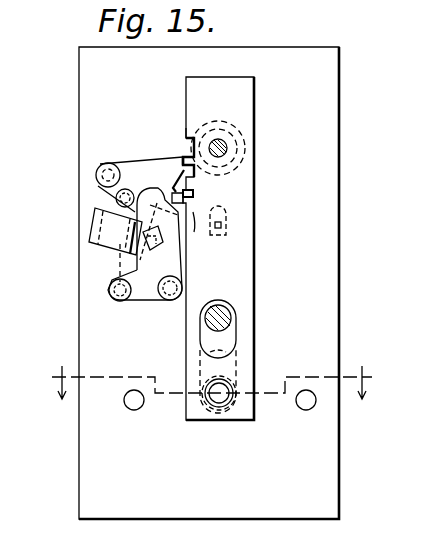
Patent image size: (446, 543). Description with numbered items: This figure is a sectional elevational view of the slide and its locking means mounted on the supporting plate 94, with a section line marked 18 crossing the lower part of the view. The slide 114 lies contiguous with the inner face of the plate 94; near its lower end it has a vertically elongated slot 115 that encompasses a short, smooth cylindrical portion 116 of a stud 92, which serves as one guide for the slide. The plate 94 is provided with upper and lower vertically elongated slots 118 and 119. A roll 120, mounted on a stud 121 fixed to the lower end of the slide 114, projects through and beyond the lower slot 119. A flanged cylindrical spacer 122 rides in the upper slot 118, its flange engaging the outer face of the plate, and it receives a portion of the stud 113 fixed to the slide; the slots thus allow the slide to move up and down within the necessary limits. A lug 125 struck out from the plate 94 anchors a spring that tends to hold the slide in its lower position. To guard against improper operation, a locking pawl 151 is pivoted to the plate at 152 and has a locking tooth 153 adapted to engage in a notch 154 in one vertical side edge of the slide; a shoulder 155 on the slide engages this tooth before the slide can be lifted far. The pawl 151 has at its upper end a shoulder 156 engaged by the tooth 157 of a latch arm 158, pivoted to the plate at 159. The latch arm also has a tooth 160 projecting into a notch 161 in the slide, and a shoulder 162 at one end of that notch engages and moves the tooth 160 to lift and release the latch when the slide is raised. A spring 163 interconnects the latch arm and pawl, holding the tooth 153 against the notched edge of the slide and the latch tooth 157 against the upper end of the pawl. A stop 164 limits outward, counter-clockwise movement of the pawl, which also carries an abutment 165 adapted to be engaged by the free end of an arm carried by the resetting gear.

The section line 18- 18 is at (208, 382).
The supporting plate 94 is at (337, 325).
The shaft 92 is at (228, 316).
The stud 113 is at (236, 150).
The slide 114 is at (254, 258).
The vertically elongated slot 115 is at (208, 345).
The cylindrical portion 116 is at (237, 324).
The upper slot 118 is at (229, 114).
The lower slot 119 is at (200, 368).
The roll 120 is at (205, 410).
The stud 121 is at (222, 402).
The flanged cylindrical spacer 122 is at (237, 161).
The lug 125 is at (229, 226).
The locking pawl 151 is at (180, 270).
The pivot 152 is at (186, 302).
The locking tooth 153 is at (190, 205).
The notch 154 is at (195, 199).
The shoulder 155 is at (195, 226).
The shoulder 156 is at (172, 200).
The tooth 157 is at (172, 186).
The latch arm 158 is at (126, 164).
The pivot 159 is at (98, 175).
The tooth 160 is at (184, 138).
The notch 161 is at (195, 138).
The shoulder 162 is at (181, 160).
The spring 163 is at (120, 268).
The stop 164 is at (124, 245).
The abutment 165 is at (160, 256).